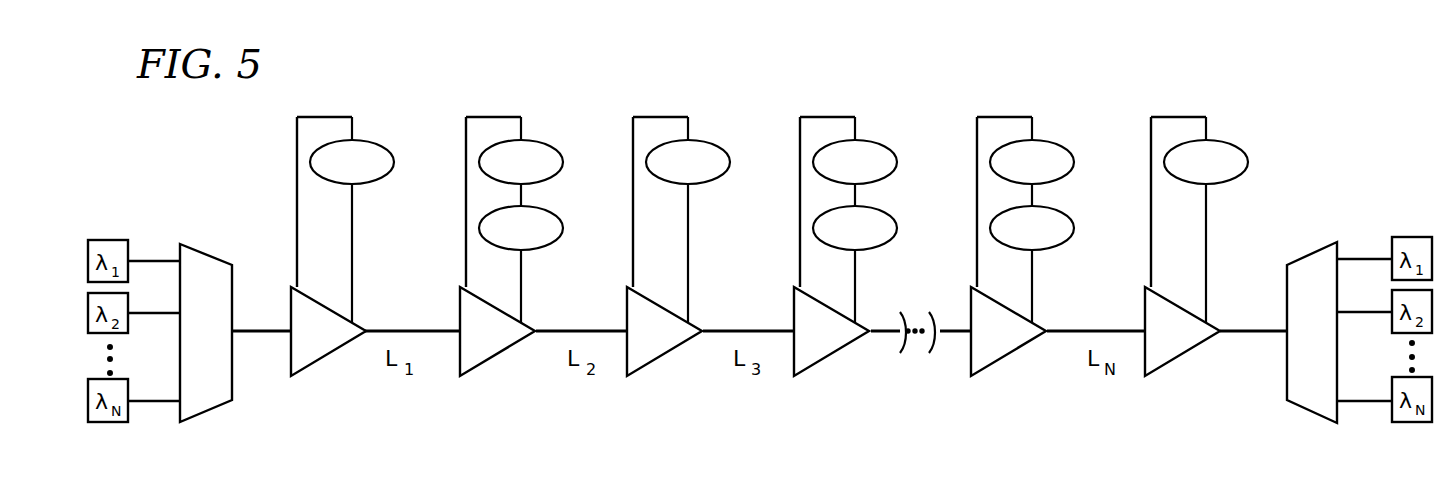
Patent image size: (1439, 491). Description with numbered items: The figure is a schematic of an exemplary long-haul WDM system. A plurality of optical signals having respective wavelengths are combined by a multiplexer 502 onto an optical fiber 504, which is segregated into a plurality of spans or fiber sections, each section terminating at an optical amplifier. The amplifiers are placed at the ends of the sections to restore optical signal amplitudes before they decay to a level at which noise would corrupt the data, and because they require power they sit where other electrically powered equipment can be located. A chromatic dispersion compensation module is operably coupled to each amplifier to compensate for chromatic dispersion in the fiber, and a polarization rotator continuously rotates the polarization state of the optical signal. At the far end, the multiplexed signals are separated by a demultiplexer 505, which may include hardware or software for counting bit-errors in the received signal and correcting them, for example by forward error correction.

The multiplexer 502 is at (205, 254).
The optical fiber 504 is at (740, 330).
The demultiplexer 505 is at (1312, 248).